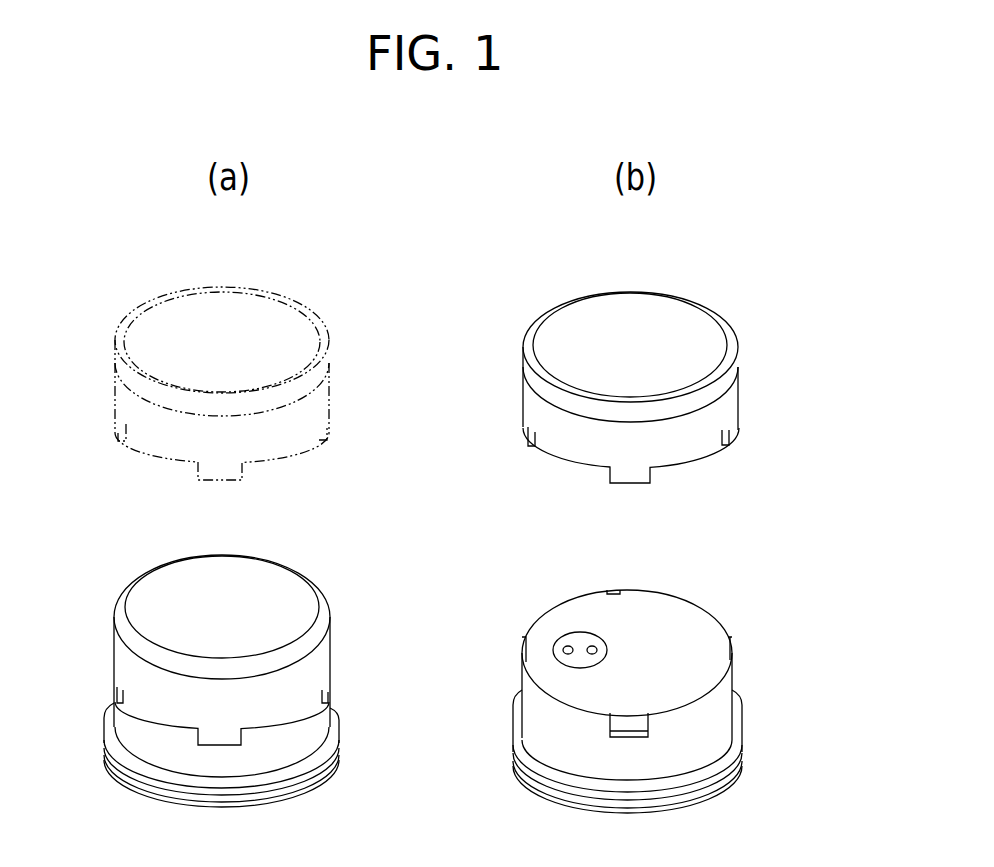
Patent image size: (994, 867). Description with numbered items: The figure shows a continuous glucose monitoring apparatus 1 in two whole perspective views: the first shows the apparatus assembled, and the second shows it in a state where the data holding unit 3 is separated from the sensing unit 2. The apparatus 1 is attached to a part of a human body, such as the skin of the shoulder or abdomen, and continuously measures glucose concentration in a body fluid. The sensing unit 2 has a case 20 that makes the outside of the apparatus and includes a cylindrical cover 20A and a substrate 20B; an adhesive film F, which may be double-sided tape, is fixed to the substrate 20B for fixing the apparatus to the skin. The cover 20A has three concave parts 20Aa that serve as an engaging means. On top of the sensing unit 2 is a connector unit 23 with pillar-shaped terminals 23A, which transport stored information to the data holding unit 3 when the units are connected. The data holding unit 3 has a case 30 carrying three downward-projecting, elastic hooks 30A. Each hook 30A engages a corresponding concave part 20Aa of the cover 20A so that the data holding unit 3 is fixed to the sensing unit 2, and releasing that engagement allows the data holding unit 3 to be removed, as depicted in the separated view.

The continuous glucose monitoring apparatus 1 is at (148, 564).
The sensing unit 2 is at (332, 713).
The data holding unit 3 is at (283, 298).
The case 20 is at (74, 792).
The cover 20A is at (162, 756).
The substrate 20B is at (168, 794).
The concave part 20Aa is at (115, 696).
The connector unit 23 is at (603, 633).
The pillar-shaped terminal 23A is at (590, 657).
The case 30 is at (324, 660).
The hook 30A is at (118, 696).
The adhesive film F is at (293, 793).